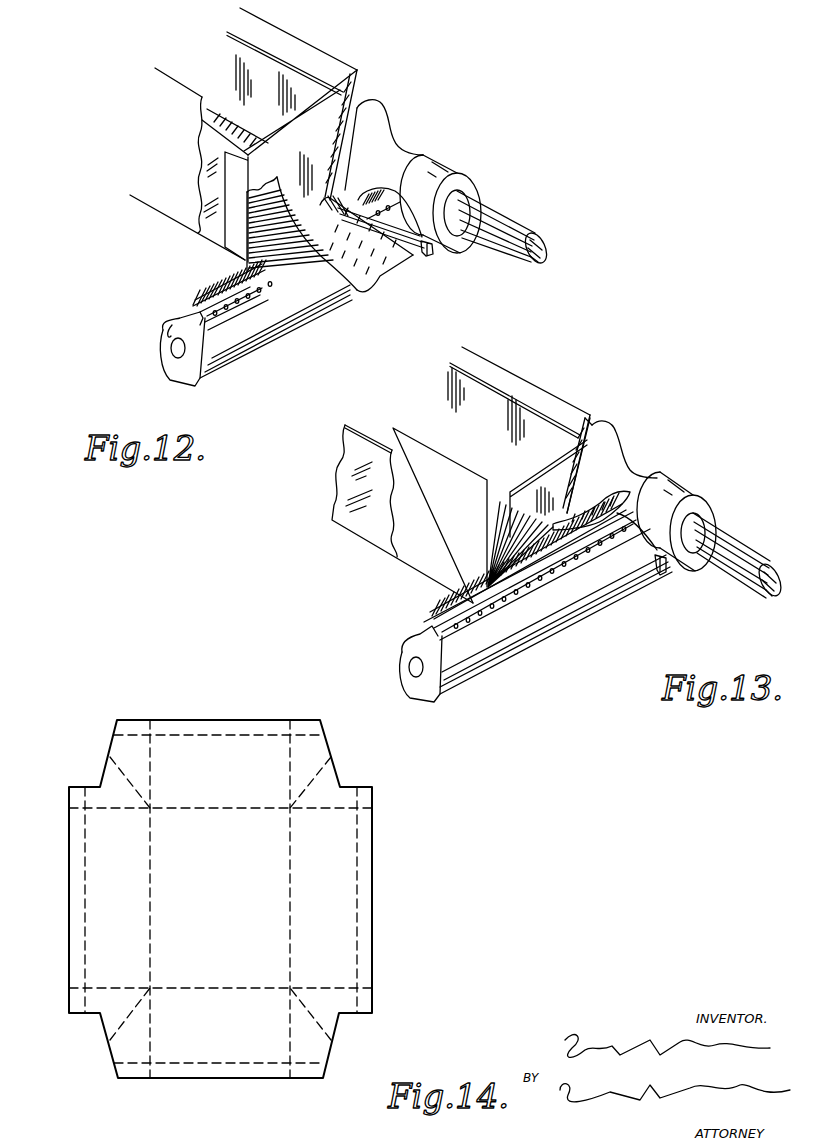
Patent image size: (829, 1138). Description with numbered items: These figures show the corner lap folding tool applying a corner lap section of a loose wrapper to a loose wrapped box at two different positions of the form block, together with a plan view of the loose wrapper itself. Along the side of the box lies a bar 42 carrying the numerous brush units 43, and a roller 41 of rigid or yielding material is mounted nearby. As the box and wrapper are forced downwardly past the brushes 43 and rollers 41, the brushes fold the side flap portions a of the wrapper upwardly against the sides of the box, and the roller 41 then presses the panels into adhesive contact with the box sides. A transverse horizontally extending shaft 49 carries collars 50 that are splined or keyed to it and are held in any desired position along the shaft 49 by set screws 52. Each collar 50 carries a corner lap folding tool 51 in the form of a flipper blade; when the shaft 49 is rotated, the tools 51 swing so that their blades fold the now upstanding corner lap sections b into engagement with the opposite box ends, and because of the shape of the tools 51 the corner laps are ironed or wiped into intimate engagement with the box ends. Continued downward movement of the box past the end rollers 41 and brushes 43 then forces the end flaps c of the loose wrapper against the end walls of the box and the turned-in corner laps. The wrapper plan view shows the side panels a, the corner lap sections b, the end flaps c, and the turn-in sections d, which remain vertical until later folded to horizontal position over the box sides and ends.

In FIG. 12, the roller 41 is at (247, 340).
In FIG. 13, the roller 41 is at (563, 588).
In FIG. 12, the bar 42 is at (253, 292).
In FIG. 13, the bar 42 is at (502, 603).
In FIG. 12, the brush units 43 is at (212, 295).
In FIG. 13, the brush units 43 is at (437, 617).
In FIG. 12, the shaft 49 is at (510, 248).
In FIG. 13, the shaft 49 is at (733, 565).
In FIG. 12, the collars 50 is at (440, 170).
In FIG. 13, the collars 50 is at (683, 487).
In FIG. 12, the corner lap folding tool 51 is at (375, 128).
In FIG. 13, the corner lap folding tool 51 is at (613, 452).
In FIG. 12, the set screws 52 is at (428, 256).
In FIG. 13, the set screws 52 is at (660, 575).
In FIG. 14, the side flap portions a is at (225, 903).
In FIG. 13, the corner lap sections b is at (570, 487).
In FIG. 14, the corner lap sections b is at (222, 897).
In FIG. 12, the end flaps c is at (379, 278).
In FIG. 13, the end flaps c is at (590, 540).
In FIG. 14, the end flaps c is at (217, 900).
In FIG. 14, the turn-in sections d is at (192, 727).